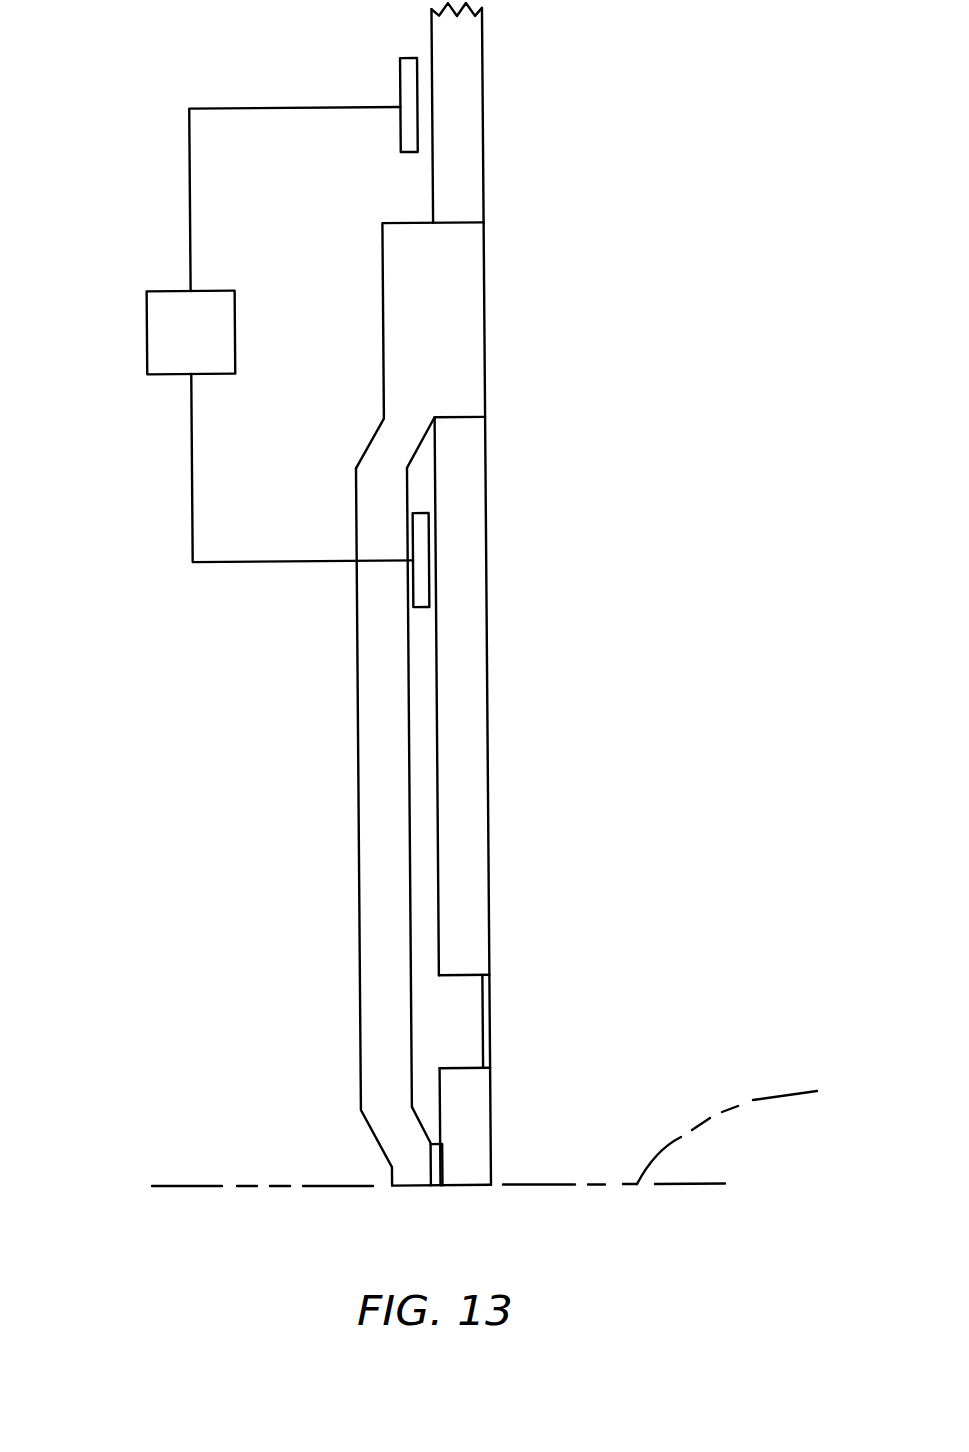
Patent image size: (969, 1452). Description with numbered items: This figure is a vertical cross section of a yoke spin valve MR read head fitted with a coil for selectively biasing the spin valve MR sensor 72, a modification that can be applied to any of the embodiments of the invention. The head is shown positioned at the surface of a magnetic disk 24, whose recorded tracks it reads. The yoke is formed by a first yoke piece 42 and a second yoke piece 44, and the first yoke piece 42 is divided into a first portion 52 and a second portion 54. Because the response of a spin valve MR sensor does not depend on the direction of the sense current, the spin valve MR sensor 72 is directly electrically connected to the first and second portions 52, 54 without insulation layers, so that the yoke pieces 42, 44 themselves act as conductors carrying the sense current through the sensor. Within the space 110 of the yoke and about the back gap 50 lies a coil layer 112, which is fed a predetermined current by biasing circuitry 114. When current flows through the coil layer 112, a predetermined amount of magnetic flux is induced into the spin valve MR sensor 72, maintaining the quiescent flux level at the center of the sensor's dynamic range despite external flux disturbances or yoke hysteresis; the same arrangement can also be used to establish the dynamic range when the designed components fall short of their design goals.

The magnetic disk 24 is at (505, 1128).
The first yoke piece 42 is at (480, 928).
The second yoke piece 44 is at (400, 903).
The back gap 50 is at (384, 309).
The first portion of the first yoke piece 52 is at (480, 1152).
The second portion of the first yoke piece 54 is at (460, 650).
The spin valve MR sensor 72 is at (483, 1008).
The space 110 is at (425, 744).
The coil layer 112 is at (417, 95).
The biasing circuitry 114 is at (158, 322).